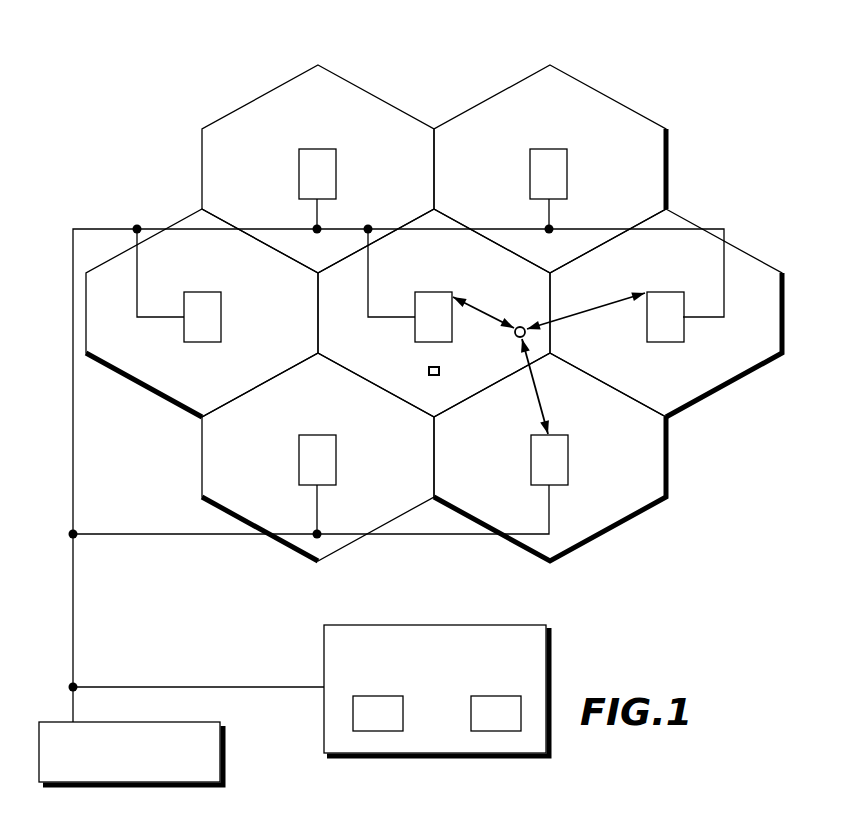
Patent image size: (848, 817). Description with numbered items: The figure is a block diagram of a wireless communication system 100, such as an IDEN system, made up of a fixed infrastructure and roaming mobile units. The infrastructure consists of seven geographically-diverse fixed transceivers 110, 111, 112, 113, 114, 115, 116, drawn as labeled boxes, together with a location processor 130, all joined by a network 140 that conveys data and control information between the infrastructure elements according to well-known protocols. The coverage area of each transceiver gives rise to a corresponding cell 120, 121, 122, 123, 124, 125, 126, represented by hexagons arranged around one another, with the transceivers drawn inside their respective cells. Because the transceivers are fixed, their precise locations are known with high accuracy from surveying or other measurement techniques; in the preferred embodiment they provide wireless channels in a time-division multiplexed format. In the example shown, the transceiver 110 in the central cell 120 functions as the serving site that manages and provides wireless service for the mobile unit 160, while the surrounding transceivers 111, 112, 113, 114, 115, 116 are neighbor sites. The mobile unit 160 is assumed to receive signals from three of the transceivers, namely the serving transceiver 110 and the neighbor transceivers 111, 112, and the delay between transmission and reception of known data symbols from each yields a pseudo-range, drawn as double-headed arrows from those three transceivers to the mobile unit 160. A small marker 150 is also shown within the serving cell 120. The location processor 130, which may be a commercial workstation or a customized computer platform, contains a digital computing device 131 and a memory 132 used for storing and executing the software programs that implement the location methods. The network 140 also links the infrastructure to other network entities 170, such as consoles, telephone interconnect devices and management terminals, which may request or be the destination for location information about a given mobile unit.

The wireless communication system 100 is at (753, 475).
The fixed transceiver 110 is at (415, 294).
The fixed transceiver 111 is at (667, 342).
The fixed transceiver 112 is at (531, 436).
The fixed transceiver 113 is at (310, 434).
The fixed transceiver 114 is at (221, 295).
The fixed transceiver 115 is at (336, 152).
The fixed transceiver 116 is at (567, 152).
The cell 120 is at (358, 375).
The cell 121 is at (768, 265).
The cell 122 is at (640, 512).
The cell 123 is at (343, 553).
The cell 124 is at (128, 376).
The cell 125 is at (338, 77).
The cell 126 is at (570, 77).
The location processor 130 is at (433, 692).
The digital computing device 131 is at (378, 731).
The memory 132 is at (495, 731).
The network 140 is at (73, 478).
The mobile unit 150 is at (440, 371).
The mobile unit 160 is at (526, 336).
The network entity 170 is at (228, 720).